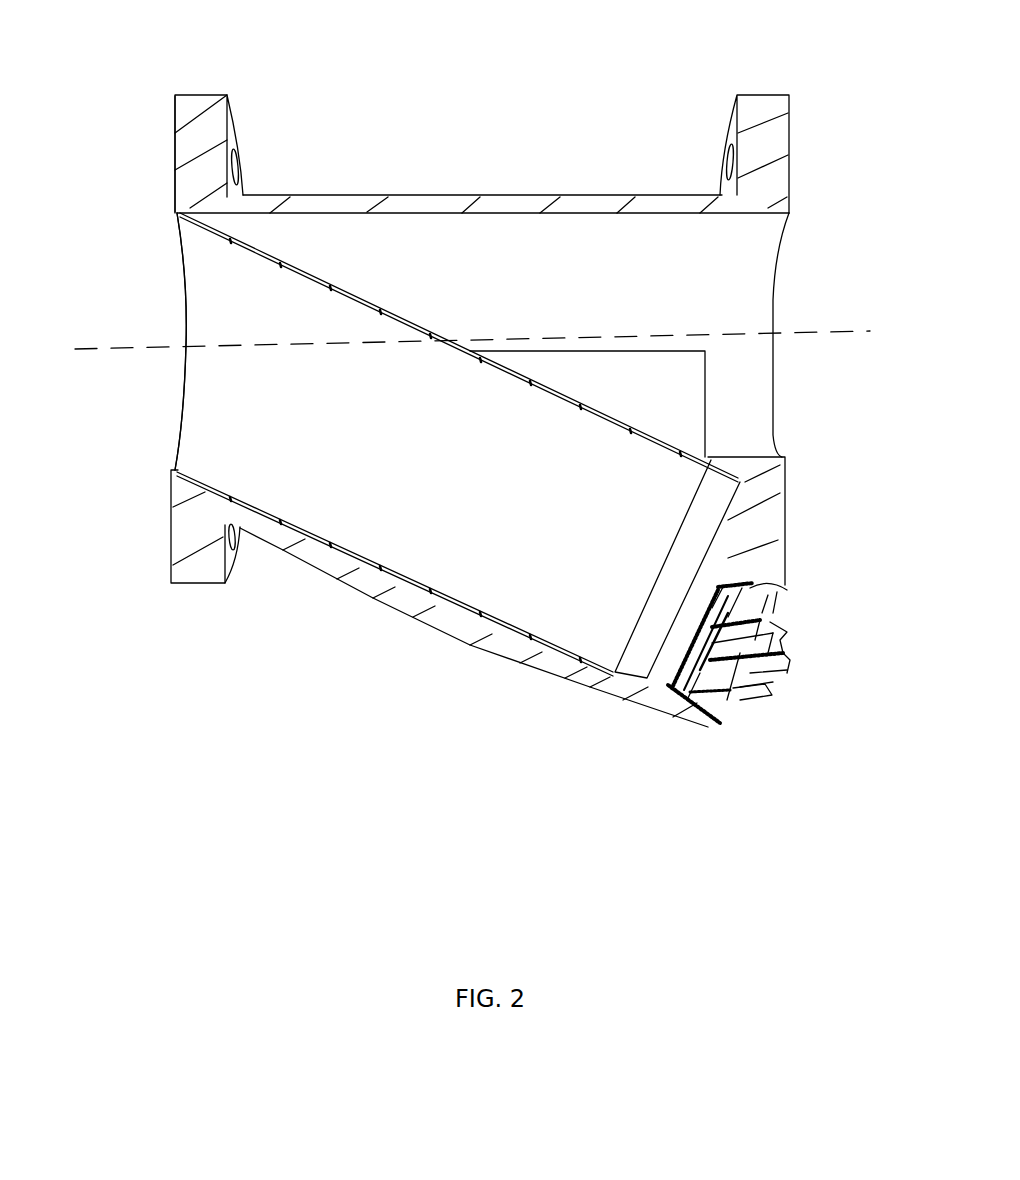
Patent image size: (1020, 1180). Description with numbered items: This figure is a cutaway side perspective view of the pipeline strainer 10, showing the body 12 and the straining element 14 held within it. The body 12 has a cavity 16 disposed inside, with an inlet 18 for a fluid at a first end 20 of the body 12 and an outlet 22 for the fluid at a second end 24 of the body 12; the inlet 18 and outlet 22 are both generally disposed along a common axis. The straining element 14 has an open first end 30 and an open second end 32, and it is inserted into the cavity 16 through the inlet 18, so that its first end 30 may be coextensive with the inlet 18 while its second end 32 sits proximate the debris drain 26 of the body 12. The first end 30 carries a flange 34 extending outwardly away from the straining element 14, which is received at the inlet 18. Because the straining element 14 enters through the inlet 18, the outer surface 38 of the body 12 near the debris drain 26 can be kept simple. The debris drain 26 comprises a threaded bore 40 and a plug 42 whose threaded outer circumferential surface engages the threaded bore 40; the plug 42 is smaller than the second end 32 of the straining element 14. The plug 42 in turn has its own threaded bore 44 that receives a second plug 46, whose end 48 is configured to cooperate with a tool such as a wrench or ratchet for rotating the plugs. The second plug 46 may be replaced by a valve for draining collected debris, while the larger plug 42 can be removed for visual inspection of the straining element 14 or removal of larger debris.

The pipeline strainer 10 is at (474, 407).
The body 12 is at (590, 195).
The straining element 14 is at (462, 550).
The cavity 16 is at (508, 300).
The inlet 18 is at (197, 322).
The first end 20 is at (176, 183).
The outlet 22 is at (765, 325).
The second end 24 is at (787, 184).
The debris drain 26 is at (770, 587).
The first end 30 is at (182, 268).
The second end 32 is at (718, 528).
The flange 34 is at (170, 200).
The outer surface 38 is at (788, 482).
The threaded bore 40 is at (692, 692).
The plug 42 is at (733, 692).
The threaded bore 44 is at (760, 690).
The second plug 46 is at (780, 650).
The end 48 is at (787, 672).